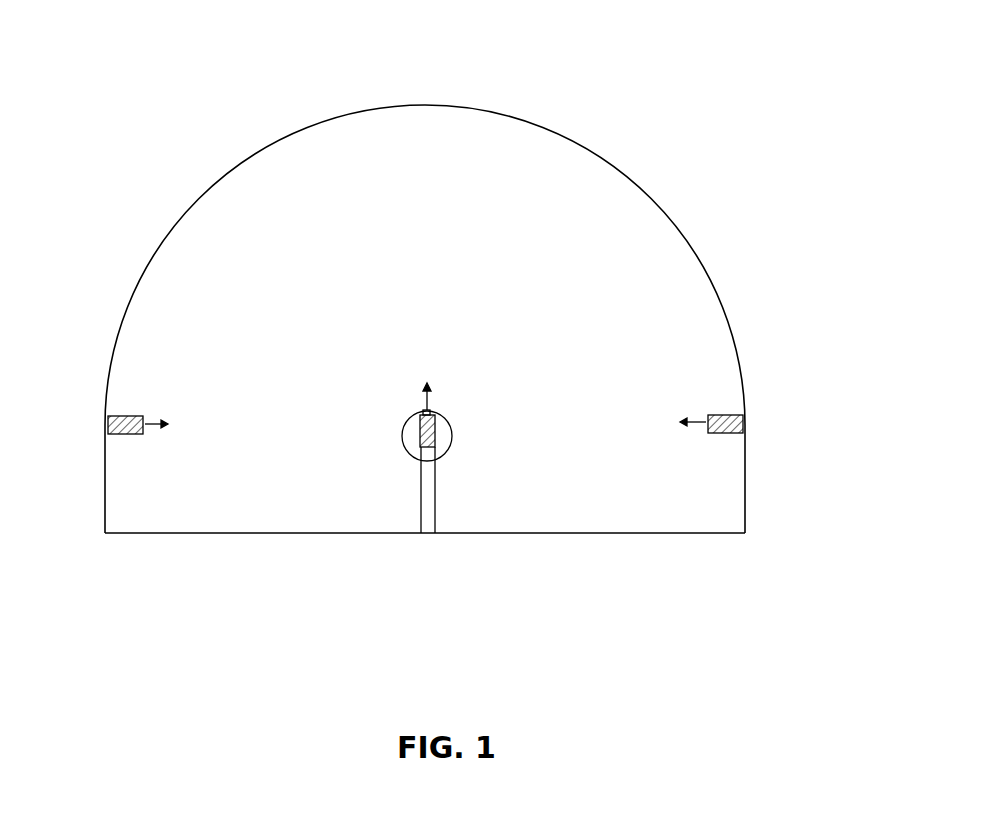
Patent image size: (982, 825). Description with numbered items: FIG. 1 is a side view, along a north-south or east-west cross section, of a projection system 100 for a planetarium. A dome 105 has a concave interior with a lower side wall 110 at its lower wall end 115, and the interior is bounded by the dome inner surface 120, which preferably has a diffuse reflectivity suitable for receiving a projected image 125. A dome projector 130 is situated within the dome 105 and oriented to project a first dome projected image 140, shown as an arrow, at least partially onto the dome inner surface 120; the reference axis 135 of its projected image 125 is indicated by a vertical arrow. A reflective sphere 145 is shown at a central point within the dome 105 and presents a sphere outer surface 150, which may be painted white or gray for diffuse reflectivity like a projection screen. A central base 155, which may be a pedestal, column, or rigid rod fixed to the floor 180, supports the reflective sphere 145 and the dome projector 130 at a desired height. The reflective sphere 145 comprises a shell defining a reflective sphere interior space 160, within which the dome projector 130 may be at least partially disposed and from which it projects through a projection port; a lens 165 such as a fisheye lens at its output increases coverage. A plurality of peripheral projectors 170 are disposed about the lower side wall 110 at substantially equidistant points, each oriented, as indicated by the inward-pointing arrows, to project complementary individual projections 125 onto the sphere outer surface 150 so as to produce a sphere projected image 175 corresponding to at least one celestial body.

The projection system 100 is at (182, 663).
The dome 105 is at (580, 98).
The lower side wall 110 is at (770, 392).
The lower wall end 115 is at (745, 533).
The dome inner surface 120 is at (700, 262).
The projected image 125 is at (155, 423).
The dome projector 130 is at (452, 428).
The reference axis 135 is at (99, 375).
The first dome projected image 140 is at (99, 387).
The reflective sphere 145 is at (408, 423).
The sphere outer surface 150 is at (400, 425).
The central base 155 is at (430, 502).
The reflective sphere interior space 160 is at (412, 442).
The lens 165 is at (437, 432).
The peripheral projectors 170 is at (125, 435).
The sphere projected image 175 is at (99, 399).
The floor 180 is at (562, 533).